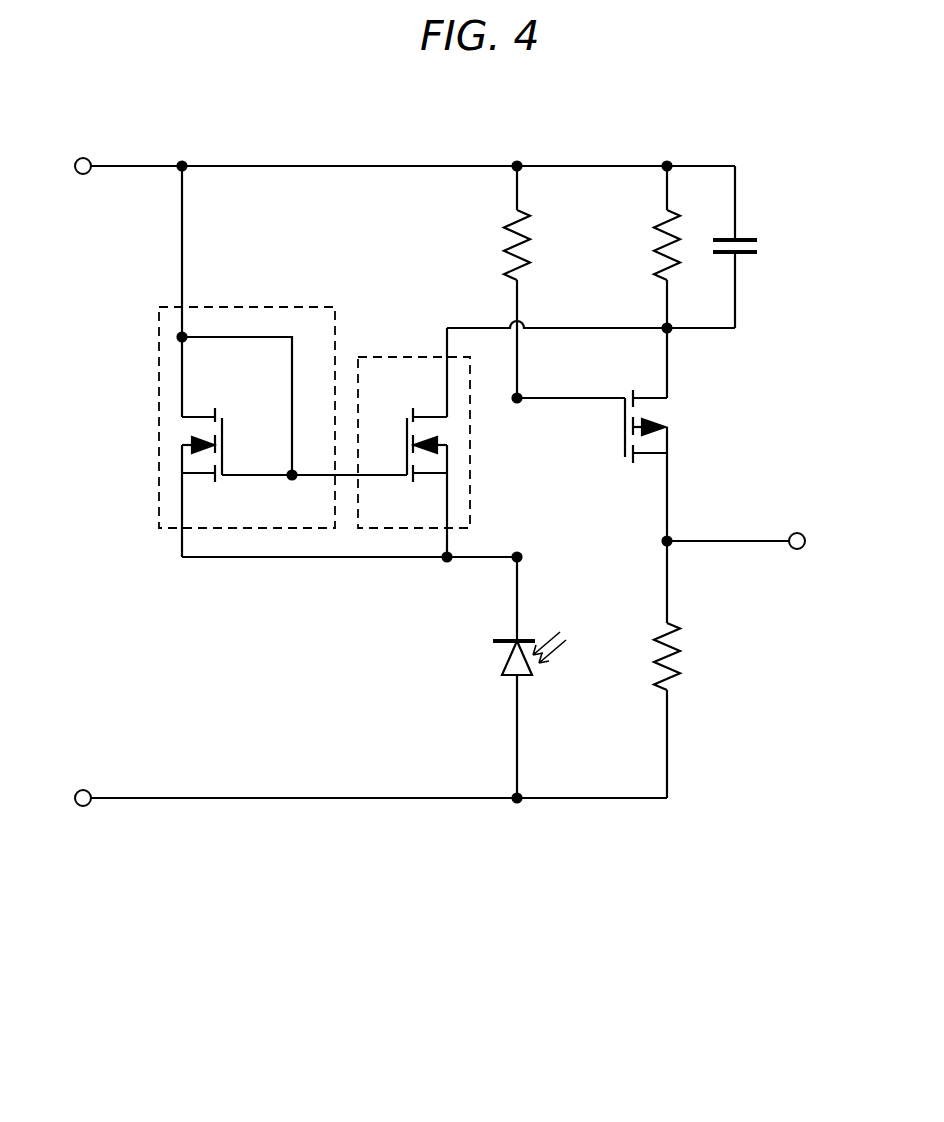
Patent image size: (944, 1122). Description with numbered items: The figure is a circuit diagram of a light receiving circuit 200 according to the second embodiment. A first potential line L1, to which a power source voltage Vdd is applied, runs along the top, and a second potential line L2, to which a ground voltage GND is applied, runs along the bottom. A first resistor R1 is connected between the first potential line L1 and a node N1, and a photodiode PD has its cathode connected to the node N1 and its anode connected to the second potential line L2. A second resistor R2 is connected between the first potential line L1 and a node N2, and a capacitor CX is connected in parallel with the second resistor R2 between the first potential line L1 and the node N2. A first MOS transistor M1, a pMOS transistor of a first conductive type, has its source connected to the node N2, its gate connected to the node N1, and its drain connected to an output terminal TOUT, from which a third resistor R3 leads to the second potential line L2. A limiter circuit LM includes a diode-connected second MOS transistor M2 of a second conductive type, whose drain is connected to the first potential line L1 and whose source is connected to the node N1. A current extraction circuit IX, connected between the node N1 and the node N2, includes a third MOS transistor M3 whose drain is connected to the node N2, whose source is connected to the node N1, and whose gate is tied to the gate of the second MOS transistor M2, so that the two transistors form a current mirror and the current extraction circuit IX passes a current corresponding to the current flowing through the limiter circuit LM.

The first potential line L1 is at (89, 161).
The second potential line L2 is at (90, 802).
The power source voltage Vdd is at (86, 134).
The ground voltage GND is at (82, 842).
The limiter circuit LM is at (243, 307).
The current extraction circuit IX is at (393, 357).
The first MOS transistor M1 is at (648, 455).
The second MOS transistor M2 is at (191, 477).
The third MOS transistor M3 is at (436, 477).
The first resistor R1 is at (506, 215).
The second resistor R2 is at (656, 215).
The third resistor R3 is at (680, 668).
The capacitor CX is at (758, 238).
The photodiode PD is at (500, 665).
The node N1 is at (519, 400).
The node N2 is at (669, 330).
The output terminal TOUT is at (795, 532).
The light receiving circuit 200 is at (452, 949).